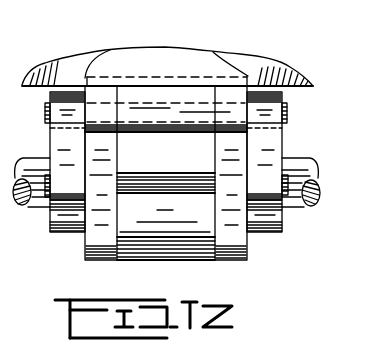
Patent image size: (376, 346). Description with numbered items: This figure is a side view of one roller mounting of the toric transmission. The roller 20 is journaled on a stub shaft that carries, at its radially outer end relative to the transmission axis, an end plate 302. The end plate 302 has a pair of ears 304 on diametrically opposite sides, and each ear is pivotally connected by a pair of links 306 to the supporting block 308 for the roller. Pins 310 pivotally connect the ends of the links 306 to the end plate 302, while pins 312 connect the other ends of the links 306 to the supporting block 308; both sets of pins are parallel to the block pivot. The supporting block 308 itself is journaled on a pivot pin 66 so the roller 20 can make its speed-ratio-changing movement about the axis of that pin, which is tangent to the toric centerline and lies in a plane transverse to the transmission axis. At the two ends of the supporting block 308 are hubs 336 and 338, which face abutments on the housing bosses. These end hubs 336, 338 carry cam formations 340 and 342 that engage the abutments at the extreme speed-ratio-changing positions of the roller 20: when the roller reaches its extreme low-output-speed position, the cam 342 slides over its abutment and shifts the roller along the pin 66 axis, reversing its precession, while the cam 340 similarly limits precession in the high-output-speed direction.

The roller 20 is at (248, 62).
The end plate 302 is at (87, 83).
The ears 304 is at (180, 132).
The supporting block 308 is at (189, 258).
The pin 312 is at (163, 170).
The links 306 is at (47, 138).
The pin 310 is at (45, 113).
The cam formation 342 is at (41, 157).
The cam formation 340 is at (287, 195).
The pivot pin 66 is at (43, 203).
The hub 338 is at (70, 226).
The hub 336 is at (272, 225).